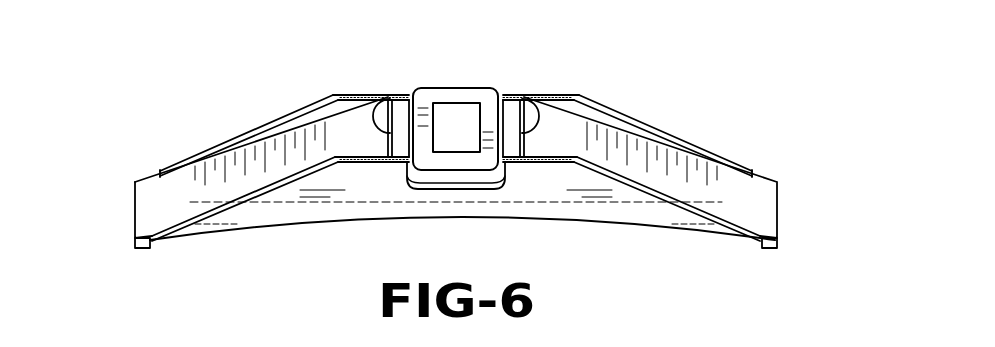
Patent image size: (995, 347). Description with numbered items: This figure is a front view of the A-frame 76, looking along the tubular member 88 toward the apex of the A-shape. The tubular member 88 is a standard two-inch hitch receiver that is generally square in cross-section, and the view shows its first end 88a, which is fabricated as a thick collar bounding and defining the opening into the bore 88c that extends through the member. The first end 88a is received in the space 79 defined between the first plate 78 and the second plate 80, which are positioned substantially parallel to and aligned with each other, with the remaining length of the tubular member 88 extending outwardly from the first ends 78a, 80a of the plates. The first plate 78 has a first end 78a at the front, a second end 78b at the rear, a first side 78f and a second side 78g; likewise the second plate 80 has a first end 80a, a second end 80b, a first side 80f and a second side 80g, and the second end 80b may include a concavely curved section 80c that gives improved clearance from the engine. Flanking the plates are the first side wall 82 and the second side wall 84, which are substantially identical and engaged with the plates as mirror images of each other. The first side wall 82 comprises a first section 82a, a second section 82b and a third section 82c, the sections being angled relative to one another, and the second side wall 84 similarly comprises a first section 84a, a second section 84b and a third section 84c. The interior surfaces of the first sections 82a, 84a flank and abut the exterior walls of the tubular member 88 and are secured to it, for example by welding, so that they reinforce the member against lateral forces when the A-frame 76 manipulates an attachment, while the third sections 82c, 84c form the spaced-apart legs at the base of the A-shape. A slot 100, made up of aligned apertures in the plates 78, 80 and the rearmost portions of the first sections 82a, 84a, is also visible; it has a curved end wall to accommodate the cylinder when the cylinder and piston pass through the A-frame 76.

The A-frame 76 is at (672, 62).
The first plate 78 is at (618, 100).
The first end of first plate 78a is at (397, 92).
The second end of first plate 78b is at (160, 168).
The first side of first plate 78f is at (200, 147).
The second side of first plate 78g is at (710, 147).
The space 79 is at (277, 150).
The second plate 80 is at (583, 228).
The first end of second plate 80a is at (375, 162).
The second end of second plate 80b is at (177, 233).
The concavely curved section 80c is at (325, 223).
The first side of second plate 80f is at (240, 203).
The second side of second plate 80g is at (657, 200).
The first side wall 82 is at (128, 200).
The first section of first side wall 82a is at (382, 110).
The second section of first side wall 82b is at (303, 143).
The third section of first side wall 82c is at (132, 243).
The second side wall 84 is at (784, 200).
The first section of second side wall 84a is at (537, 110).
The second section of second side wall 84b is at (655, 163).
The third section of second side wall 84c is at (780, 243).
The tubular member 88 is at (492, 76).
The first end of tubular member 88a is at (430, 95).
The bore 88c is at (450, 125).
The slot 100 is at (460, 178).